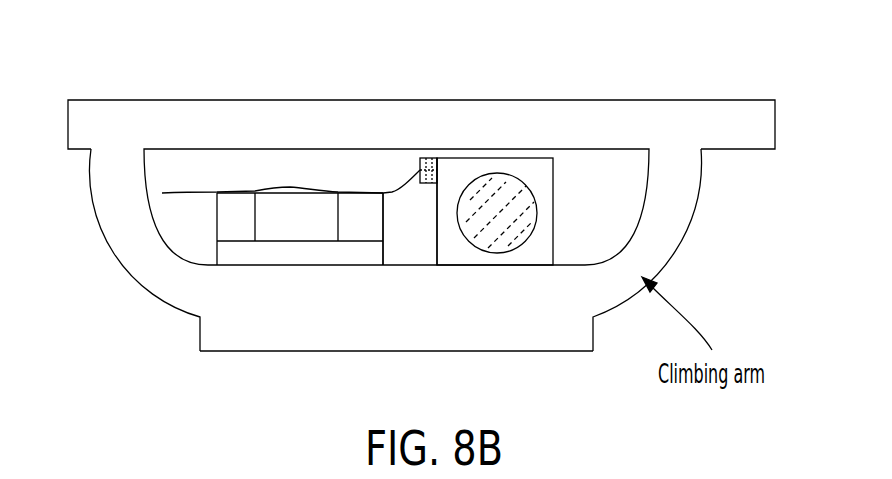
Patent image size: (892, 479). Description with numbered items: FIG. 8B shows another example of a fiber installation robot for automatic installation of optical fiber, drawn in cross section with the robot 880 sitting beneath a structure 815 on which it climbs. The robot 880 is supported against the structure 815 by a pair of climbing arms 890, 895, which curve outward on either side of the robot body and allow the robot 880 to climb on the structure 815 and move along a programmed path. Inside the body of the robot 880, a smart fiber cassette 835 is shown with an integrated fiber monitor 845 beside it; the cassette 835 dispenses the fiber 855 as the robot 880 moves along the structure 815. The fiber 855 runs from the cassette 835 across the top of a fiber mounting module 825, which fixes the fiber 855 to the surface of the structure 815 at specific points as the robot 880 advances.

The structure 815 is at (290, 99).
The fiber mounting module 825 is at (227, 205).
The smart fiber cassette 835 is at (553, 178).
The fiber monitor 845 is at (432, 183).
The fiber 855 is at (290, 188).
The robot 880 is at (385, 335).
The climbing arm 890 is at (685, 227).
The climbing arm 895 is at (118, 245).